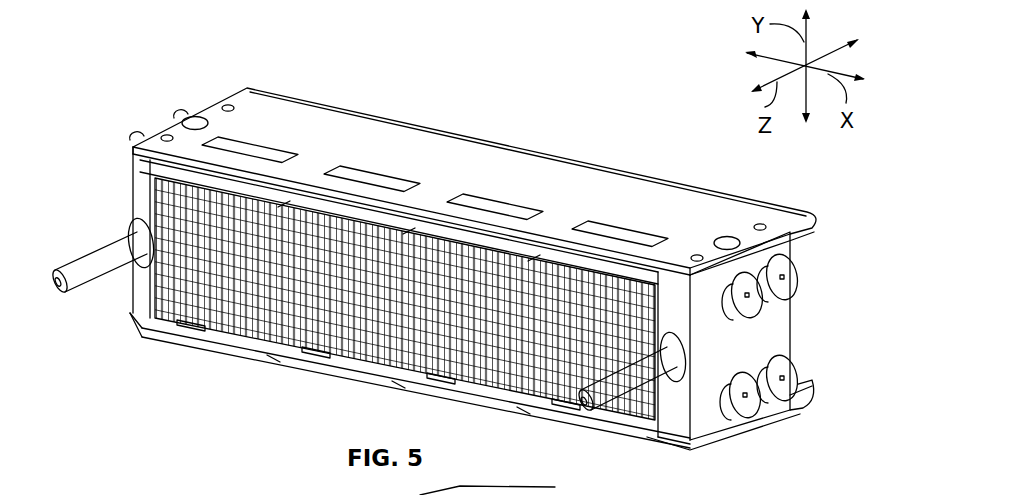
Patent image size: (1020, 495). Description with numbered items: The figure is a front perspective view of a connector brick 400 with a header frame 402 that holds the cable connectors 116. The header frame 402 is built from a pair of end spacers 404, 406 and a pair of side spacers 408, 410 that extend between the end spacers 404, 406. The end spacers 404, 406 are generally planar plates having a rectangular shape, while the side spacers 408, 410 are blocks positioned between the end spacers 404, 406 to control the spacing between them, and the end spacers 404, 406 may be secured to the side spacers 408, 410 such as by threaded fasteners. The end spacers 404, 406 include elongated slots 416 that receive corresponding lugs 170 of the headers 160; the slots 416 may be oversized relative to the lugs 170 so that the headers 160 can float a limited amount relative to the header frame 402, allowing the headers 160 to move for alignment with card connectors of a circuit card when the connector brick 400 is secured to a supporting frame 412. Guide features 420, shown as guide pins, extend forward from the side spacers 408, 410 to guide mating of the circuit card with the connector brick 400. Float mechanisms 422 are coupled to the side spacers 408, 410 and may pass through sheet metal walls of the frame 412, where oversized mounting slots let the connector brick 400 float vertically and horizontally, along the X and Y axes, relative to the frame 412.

The connector brick 400 is at (588, 88).
The header frame 402 is at (777, 196).
The end spacer 404 is at (648, 195).
The end spacer 406 is at (675, 445).
The side spacer 408 is at (777, 317).
The side spacer 410 is at (140, 300).
The frame 412 is at (310, 494).
The elongated slot 416 is at (275, 150).
The guide feature 420 is at (97, 258).
The float mechanism 422 is at (787, 363).
The lug 170 is at (245, 146).
The cable connector 116 is at (176, 322).
The header 160 is at (240, 350).